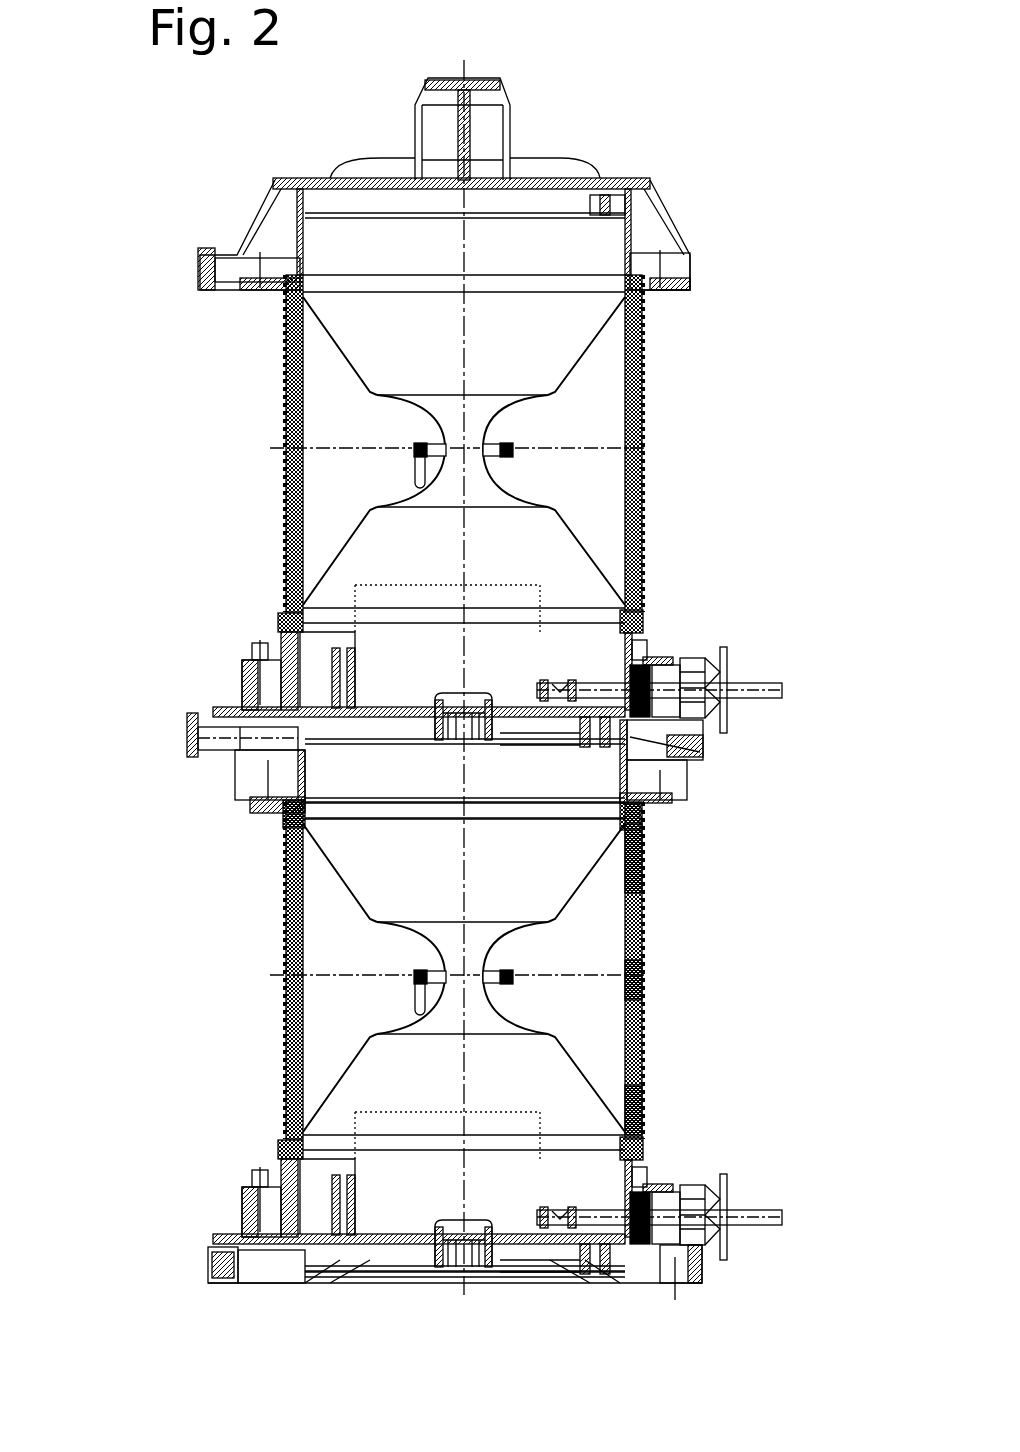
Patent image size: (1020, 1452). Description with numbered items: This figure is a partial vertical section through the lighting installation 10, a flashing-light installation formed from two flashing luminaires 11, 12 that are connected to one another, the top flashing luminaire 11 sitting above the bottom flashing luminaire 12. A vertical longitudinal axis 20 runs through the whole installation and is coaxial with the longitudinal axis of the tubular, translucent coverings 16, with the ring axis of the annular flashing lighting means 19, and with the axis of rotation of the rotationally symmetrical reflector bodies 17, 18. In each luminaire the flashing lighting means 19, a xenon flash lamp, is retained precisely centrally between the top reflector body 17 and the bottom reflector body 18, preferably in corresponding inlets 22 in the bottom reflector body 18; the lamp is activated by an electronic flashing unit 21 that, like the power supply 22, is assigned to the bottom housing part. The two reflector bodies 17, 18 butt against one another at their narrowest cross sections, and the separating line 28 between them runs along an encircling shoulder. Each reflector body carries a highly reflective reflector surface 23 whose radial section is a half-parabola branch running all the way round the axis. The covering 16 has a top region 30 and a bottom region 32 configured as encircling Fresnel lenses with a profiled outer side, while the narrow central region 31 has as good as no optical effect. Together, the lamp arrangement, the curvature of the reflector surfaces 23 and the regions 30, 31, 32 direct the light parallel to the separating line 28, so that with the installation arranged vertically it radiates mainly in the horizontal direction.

The lighting installation 10 is at (727, 103).
The top flashing luminaire 11 is at (192, 531).
The bottom flashing luminaire 12 is at (195, 943).
The translucent covering 16 is at (645, 503).
The top reflector body 17 is at (513, 365).
The bottom reflector body 18 is at (560, 577).
The flashing lighting means 19 is at (510, 437).
The vertical longitudinal axis 20 is at (465, 236).
The electronic flashing unit 21 is at (413, 675).
The power supply 22 is at (412, 483).
The reflector surface 23 is at (417, 420).
The separating line 28 is at (340, 447).
The top region 30 is at (627, 888).
The narrow central region 31 is at (632, 987).
The bottom region 32 is at (640, 1106).